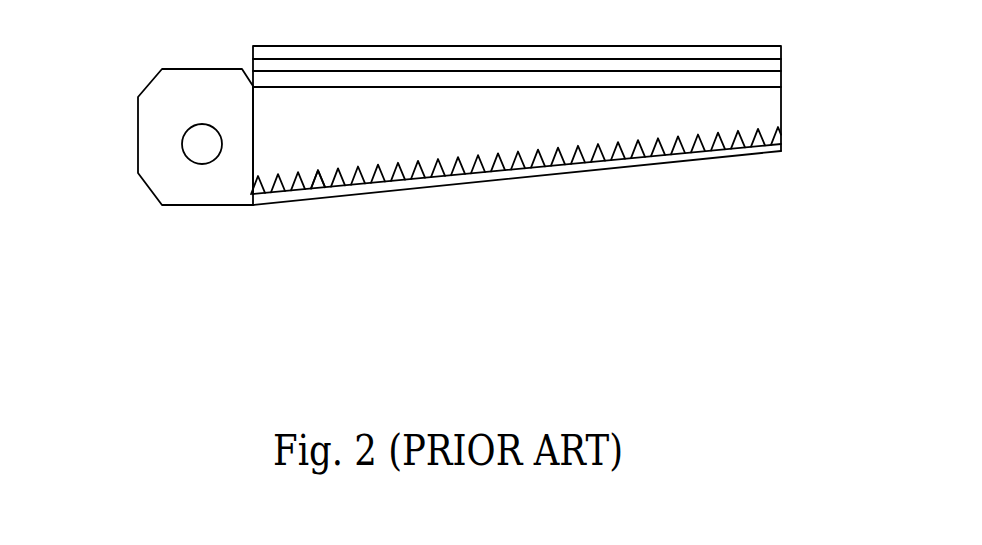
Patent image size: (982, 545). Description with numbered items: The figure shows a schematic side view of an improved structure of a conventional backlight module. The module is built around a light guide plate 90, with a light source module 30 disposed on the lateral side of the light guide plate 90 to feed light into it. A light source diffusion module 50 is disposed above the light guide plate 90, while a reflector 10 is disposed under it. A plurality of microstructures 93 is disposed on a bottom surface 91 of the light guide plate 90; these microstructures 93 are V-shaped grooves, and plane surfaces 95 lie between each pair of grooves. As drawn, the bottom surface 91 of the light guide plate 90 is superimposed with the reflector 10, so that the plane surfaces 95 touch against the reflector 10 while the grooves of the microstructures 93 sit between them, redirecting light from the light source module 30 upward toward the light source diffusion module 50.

The reflector 10 is at (705, 155).
The light source module 30 is at (138, 140).
The light source diffusion module 50 is at (781, 53).
The light guide plate 90 is at (763, 102).
The bottom surface 91 is at (327, 190).
The microstructures 93 is at (538, 168).
The plane surfaces 95 is at (450, 177).